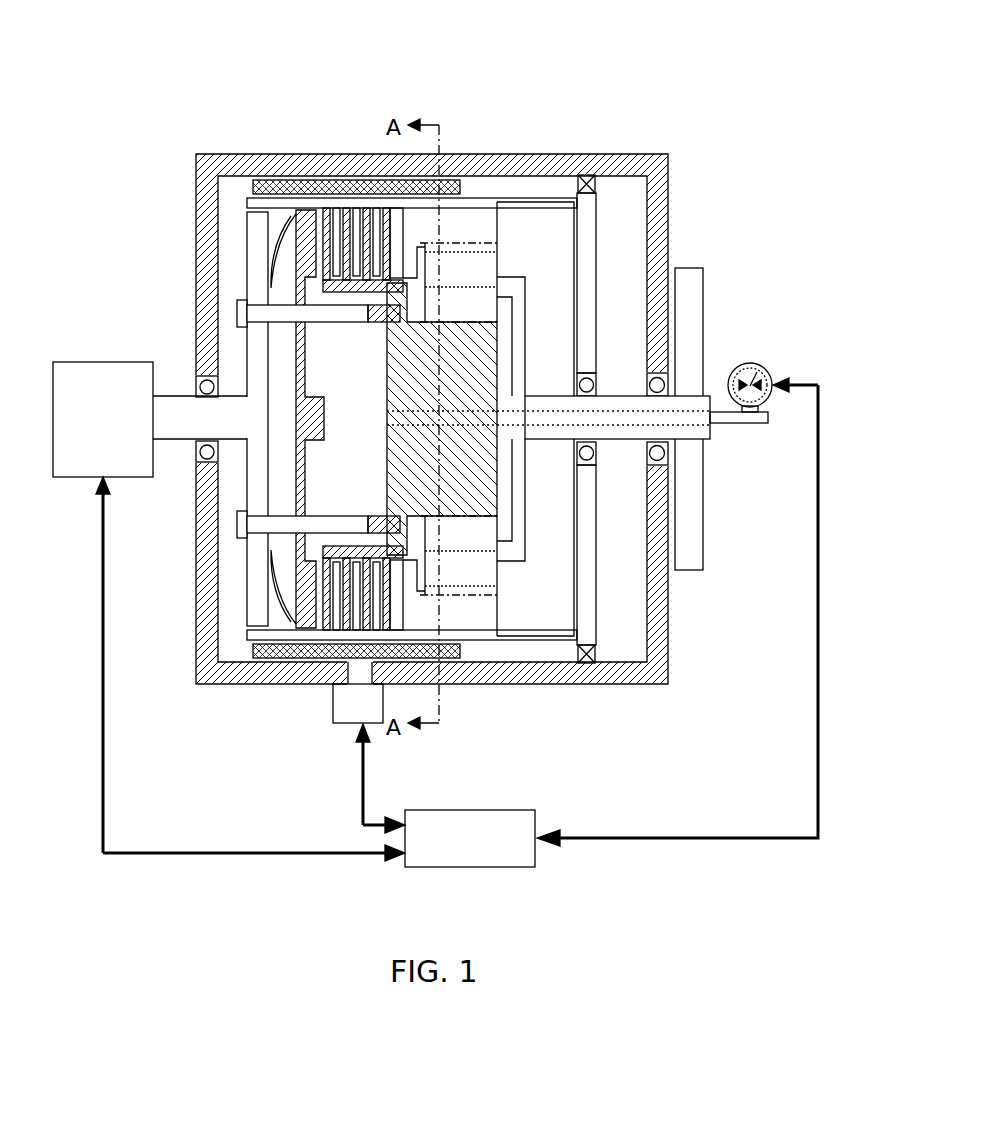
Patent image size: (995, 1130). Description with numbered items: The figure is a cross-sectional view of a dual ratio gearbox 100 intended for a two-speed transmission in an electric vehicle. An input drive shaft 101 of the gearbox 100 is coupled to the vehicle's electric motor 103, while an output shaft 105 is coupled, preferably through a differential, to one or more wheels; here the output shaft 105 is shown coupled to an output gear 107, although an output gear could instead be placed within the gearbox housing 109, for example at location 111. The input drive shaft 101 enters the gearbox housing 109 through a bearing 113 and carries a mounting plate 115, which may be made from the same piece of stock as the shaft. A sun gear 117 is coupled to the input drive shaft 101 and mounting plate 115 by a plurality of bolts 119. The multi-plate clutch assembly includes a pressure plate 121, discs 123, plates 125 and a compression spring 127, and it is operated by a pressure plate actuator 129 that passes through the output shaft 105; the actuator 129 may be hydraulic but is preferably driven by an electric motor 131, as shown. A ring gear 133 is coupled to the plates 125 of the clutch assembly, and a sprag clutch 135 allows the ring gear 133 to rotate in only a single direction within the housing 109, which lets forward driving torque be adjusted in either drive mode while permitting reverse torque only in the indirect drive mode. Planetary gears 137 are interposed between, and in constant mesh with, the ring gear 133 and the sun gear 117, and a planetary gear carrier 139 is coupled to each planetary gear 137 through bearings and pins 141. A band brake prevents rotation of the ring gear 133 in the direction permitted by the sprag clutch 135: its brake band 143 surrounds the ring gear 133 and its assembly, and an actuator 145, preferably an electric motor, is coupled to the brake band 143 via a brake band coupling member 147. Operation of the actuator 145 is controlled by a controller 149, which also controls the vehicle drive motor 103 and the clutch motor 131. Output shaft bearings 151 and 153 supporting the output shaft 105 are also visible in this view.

The gearbox 100 is at (212, 92).
The input drive shaft 101 is at (216, 431).
The electric motor 103 is at (130, 362).
The output shaft 105 is at (710, 430).
The output gear 107 is at (690, 282).
The gearbox housing 109 is at (497, 163).
The bearing 111 is at (621, 386).
The input bearing 113 is at (206, 378).
The mounting plate 115 is at (252, 278).
The sun gear 117 is at (384, 437).
The bolts 119 is at (238, 528).
The pressure plate 121 is at (305, 343).
The discs 123 is at (362, 260).
The plates 125 is at (352, 240).
The compression spring 127 is at (273, 592).
The pressure plate actuator 129 is at (765, 421).
The electric motor 131 is at (762, 370).
The ring gear 133 is at (488, 229).
The sprag clutch 135 is at (598, 183).
The planetary gears 137 is at (488, 276).
The planetary gear carrier 139 is at (515, 283).
The pins 141 is at (467, 287).
The brake band 143 is at (303, 657).
The actuator 145 is at (350, 702).
The brake band coupling member 147 is at (345, 673).
The controller 149 is at (490, 810).
The output shaft bearing 151 is at (660, 372).
The output shaft bearing 153 is at (593, 455).